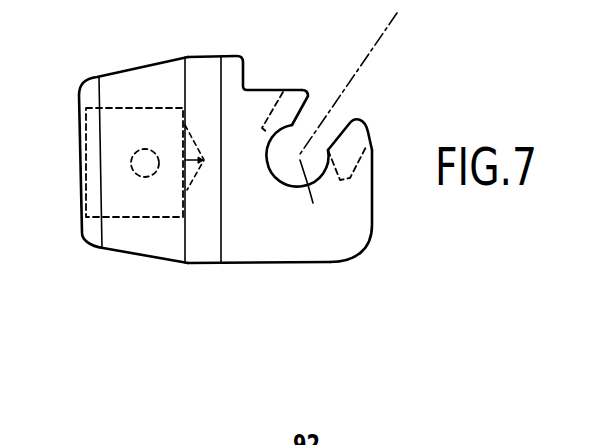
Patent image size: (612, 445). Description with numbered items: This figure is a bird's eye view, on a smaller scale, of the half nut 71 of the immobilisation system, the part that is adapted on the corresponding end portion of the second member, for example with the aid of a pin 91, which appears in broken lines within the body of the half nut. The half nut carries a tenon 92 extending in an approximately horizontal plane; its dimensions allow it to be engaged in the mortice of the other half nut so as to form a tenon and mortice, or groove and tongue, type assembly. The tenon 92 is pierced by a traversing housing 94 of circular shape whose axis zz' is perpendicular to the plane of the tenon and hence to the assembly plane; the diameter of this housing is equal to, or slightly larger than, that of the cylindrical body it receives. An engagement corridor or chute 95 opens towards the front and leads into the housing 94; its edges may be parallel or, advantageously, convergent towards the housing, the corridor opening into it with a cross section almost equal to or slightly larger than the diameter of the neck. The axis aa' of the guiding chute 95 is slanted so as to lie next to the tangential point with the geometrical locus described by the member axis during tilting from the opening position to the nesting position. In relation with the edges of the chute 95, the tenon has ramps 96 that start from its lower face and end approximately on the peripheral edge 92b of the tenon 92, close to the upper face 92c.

The half nut 71 is at (127, 262).
The pin 91 is at (143, 162).
The tenon 92 is at (321, 262).
The peripheral edge 92b is at (364, 250).
The upper face 92c is at (243, 267).
The traversing housing 94 is at (268, 163).
The engagement corridor 95 is at (310, 117).
The ramp 96 is at (370, 157).
The axis of the guiding chute aa' is at (347, 78).
The axis of the traversing housing zz' is at (320, 196).